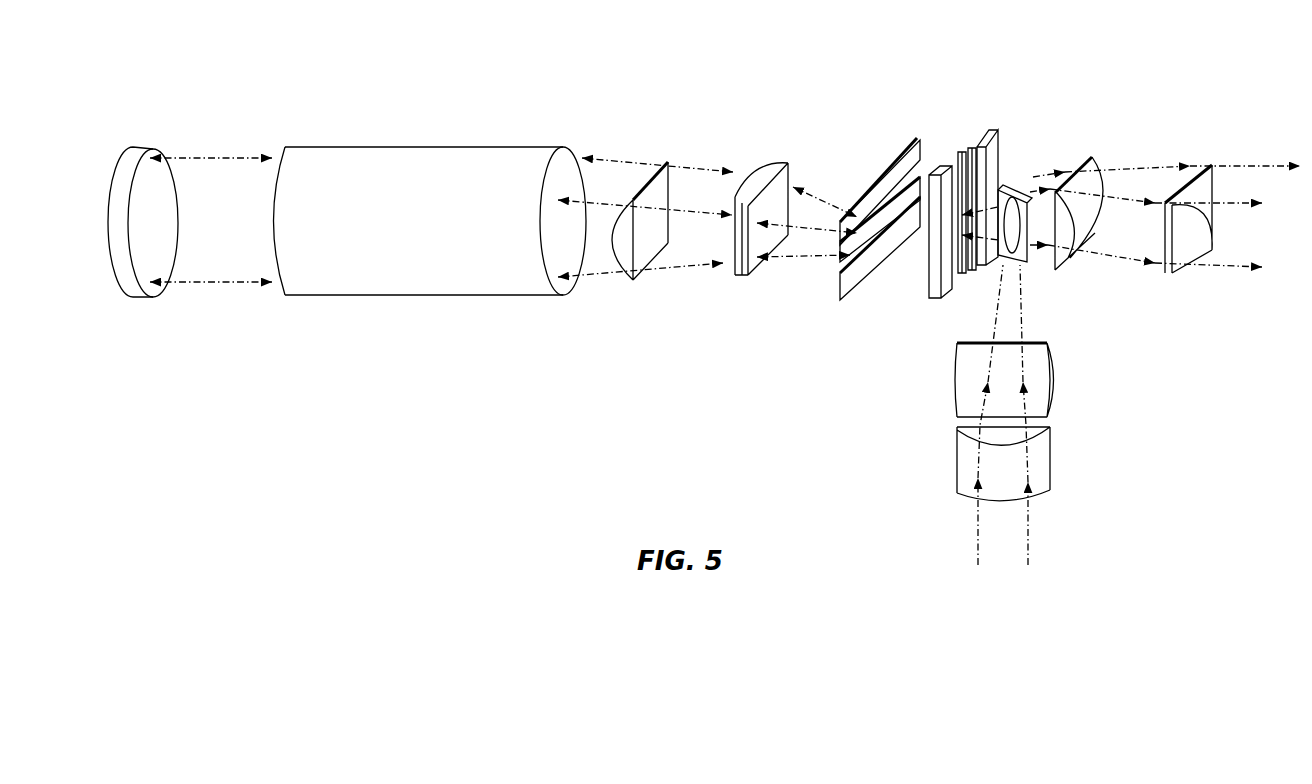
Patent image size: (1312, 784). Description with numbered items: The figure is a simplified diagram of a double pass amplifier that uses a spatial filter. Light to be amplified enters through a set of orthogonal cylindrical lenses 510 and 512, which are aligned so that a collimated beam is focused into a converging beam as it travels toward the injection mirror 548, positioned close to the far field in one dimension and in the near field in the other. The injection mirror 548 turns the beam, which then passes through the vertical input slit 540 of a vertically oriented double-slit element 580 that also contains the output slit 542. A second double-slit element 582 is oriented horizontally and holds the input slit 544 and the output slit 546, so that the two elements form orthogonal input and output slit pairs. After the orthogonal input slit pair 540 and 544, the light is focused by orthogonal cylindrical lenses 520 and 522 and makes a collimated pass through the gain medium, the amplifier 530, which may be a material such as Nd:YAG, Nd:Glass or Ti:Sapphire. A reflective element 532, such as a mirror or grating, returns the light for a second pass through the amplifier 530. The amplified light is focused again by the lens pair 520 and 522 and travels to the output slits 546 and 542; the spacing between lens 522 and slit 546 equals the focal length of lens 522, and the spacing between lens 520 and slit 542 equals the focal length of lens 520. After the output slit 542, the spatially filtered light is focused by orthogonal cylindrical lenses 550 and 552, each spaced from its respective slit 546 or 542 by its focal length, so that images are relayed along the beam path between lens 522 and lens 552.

The cylindrical lens 510 is at (957, 456).
The cylindrical lens 512 is at (957, 380).
The cylindrical lens 520 is at (772, 165).
The cylindrical lens 522 is at (645, 250).
The amplifier 530 is at (398, 297).
The reflective element 532 is at (136, 299).
The input slit 540 is at (958, 150).
The output slit 542 is at (972, 142).
The input slit 544 is at (838, 279).
The output slit 546 is at (895, 207).
The injection mirror 548 is at (1017, 200).
The cylindrical lens 550 is at (1097, 253).
The cylindrical lens 552 is at (1180, 243).
The double-slit element 580 is at (960, 67).
The double-slit element 582 is at (885, 134).